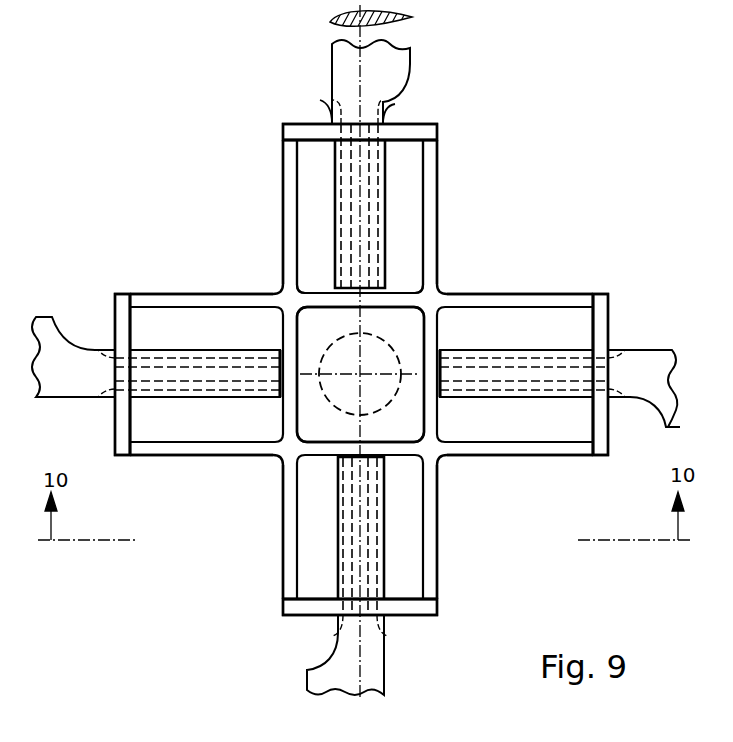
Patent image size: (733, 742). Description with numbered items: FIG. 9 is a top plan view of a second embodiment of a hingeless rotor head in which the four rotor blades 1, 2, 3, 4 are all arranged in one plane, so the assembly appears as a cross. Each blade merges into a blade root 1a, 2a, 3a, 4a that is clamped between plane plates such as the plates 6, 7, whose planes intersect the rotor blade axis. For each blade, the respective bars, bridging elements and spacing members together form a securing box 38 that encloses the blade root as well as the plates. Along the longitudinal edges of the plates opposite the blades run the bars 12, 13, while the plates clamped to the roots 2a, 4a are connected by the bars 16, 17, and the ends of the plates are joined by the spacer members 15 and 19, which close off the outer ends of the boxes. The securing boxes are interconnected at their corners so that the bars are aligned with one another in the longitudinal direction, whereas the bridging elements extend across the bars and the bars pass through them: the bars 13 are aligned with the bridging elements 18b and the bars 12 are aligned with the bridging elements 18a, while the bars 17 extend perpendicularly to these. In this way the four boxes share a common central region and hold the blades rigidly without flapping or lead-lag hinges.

The rotor blade 1 is at (347, 77).
The blade root 1a is at (357, 233).
The rotor blade 2 is at (653, 372).
The blade root 2a is at (553, 376).
The rotor blade 3 is at (372, 660).
The blade root 3a is at (353, 520).
The rotor blade 4 is at (63, 352).
The blade root 4a is at (150, 375).
The plane plate 6 is at (396, 208).
The plane plate 7 is at (322, 202).
The bar 12 is at (290, 203).
The bar 13 is at (427, 168).
The spacer member 15 is at (395, 134).
The bar 16 is at (197, 447).
The bar 17 is at (183, 298).
The bridging element 18a is at (293, 405).
The bridging element 18b is at (427, 340).
The spacer member 19 is at (123, 325).
The securing box 38 is at (402, 568).